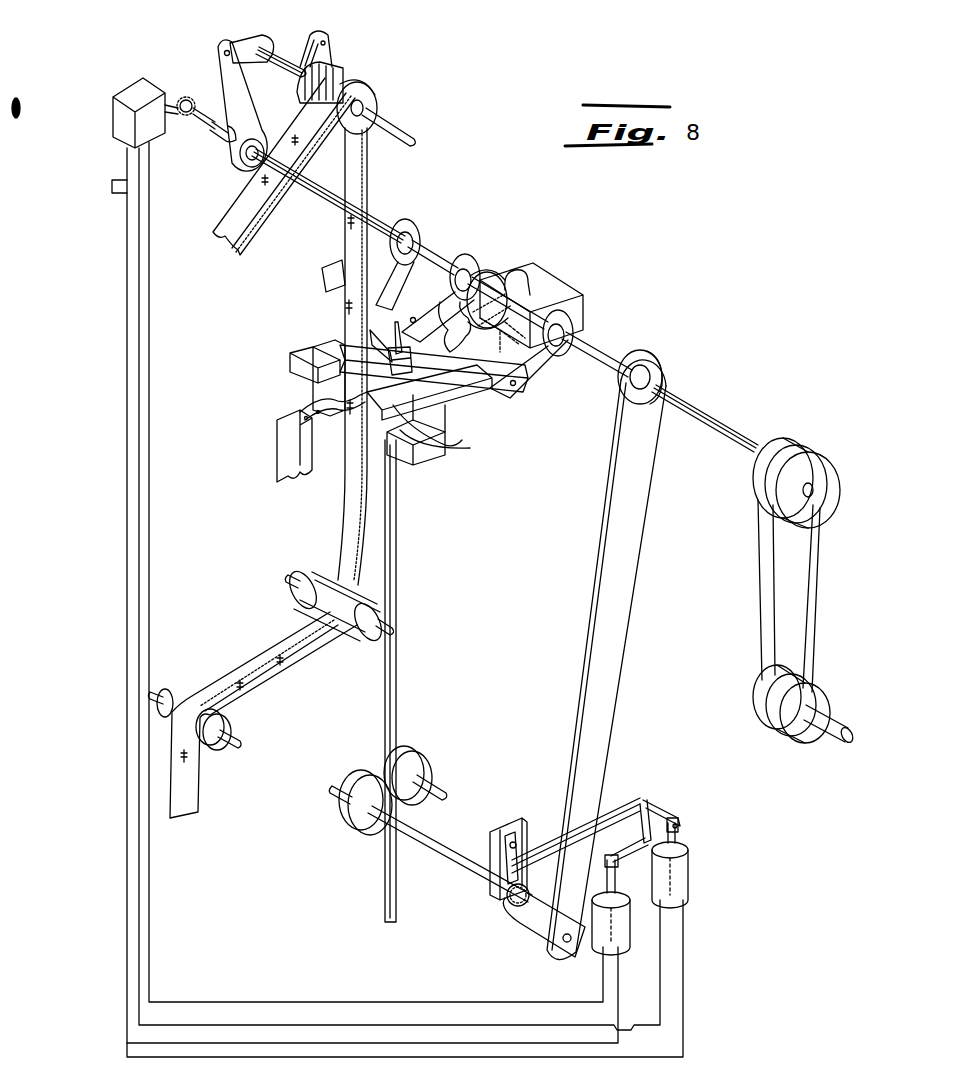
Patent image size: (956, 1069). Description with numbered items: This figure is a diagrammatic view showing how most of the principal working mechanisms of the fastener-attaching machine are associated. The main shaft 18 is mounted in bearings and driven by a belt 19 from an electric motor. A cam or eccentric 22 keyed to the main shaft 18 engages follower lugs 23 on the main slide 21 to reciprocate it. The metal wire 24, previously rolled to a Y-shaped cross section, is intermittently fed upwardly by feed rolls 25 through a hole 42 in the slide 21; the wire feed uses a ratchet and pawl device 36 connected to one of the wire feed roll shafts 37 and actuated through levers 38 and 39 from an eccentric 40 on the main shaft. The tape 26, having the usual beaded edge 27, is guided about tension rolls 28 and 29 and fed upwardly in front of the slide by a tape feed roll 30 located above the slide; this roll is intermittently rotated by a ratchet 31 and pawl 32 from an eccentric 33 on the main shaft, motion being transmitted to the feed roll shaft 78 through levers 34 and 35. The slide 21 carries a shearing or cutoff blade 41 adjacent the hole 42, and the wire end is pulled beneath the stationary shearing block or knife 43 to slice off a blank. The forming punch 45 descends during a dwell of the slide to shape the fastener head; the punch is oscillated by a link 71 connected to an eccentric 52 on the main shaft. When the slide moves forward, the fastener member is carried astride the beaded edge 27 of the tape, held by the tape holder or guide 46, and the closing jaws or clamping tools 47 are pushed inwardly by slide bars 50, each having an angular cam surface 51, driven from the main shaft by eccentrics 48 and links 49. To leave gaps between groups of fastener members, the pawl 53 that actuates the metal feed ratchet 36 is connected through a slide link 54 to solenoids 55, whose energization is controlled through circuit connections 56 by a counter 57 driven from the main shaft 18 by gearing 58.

The main shaft 18 is at (698, 400).
The belt 19 is at (818, 575).
The main slide 21 is at (565, 283).
The cam or eccentric 22 is at (497, 282).
The follower lugs 23 is at (525, 280).
The metal wire 24 is at (398, 485).
The feed rolls 25 is at (428, 772).
The tape 26 is at (345, 240).
The beaded edge 27 is at (245, 668).
The tension roll 28 is at (226, 716).
The tension roll 29 is at (320, 578).
The tape feed roll 30 is at (372, 100).
The ratchet 31 is at (338, 66).
The pawl 32 is at (326, 36).
The eccentric 33 is at (258, 168).
The lever 34 is at (222, 80).
The lever 35 is at (256, 40).
The ratchet and pawl device 36 is at (505, 898).
The wire feed roll shaft 37 is at (440, 865).
The lever 38 is at (545, 940).
The lever 39 is at (625, 580).
The eccentric 40 is at (660, 365).
The shearing or cutoff blade 41 is at (450, 395).
The hole 42 is at (388, 360).
The stationary shearing block or knife 43 is at (398, 320).
The forming punch 45 is at (375, 335).
The tape holder or guide 46 is at (285, 412).
The closing jaws or clamping tools 47 is at (465, 448).
The eccentrics 48 is at (470, 268).
The links 49 is at (458, 258).
The slide bars 50 is at (290, 360).
The angular cam surface 51 is at (445, 430).
The eccentric 52 is at (414, 232).
The pawl 53 is at (522, 830).
The slide link 54 is at (645, 795).
The solenoids 55 is at (632, 930).
The circuit connections 56 is at (143, 555).
The counter 57 is at (127, 96).
The gearing 58 is at (185, 95).
The link 71 is at (322, 272).
The feed roll shaft 78 is at (402, 124).